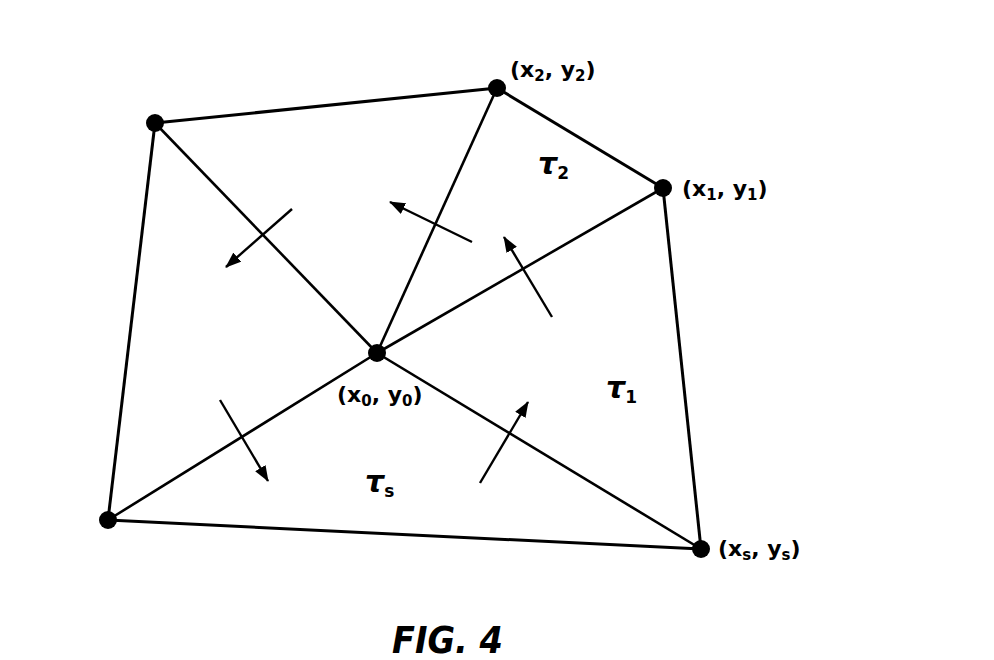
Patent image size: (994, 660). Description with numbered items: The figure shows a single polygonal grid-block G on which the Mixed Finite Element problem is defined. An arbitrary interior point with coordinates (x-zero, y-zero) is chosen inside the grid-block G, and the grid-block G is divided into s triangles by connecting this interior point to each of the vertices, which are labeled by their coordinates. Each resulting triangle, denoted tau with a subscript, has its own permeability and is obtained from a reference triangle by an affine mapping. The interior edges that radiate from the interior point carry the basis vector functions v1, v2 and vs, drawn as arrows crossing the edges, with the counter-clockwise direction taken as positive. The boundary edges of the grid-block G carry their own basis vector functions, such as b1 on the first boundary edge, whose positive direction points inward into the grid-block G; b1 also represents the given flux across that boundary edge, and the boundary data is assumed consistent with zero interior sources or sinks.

The grid-block G is at (706, 431).
The basis vector function for first boundary edge b1 is at (651, 345).
The basis vector function for first interior edge v1 is at (539, 292).
The basis vector function for second interior edge v2 is at (465, 236).
The basis vector function for s-th interior edge vs is at (491, 466).